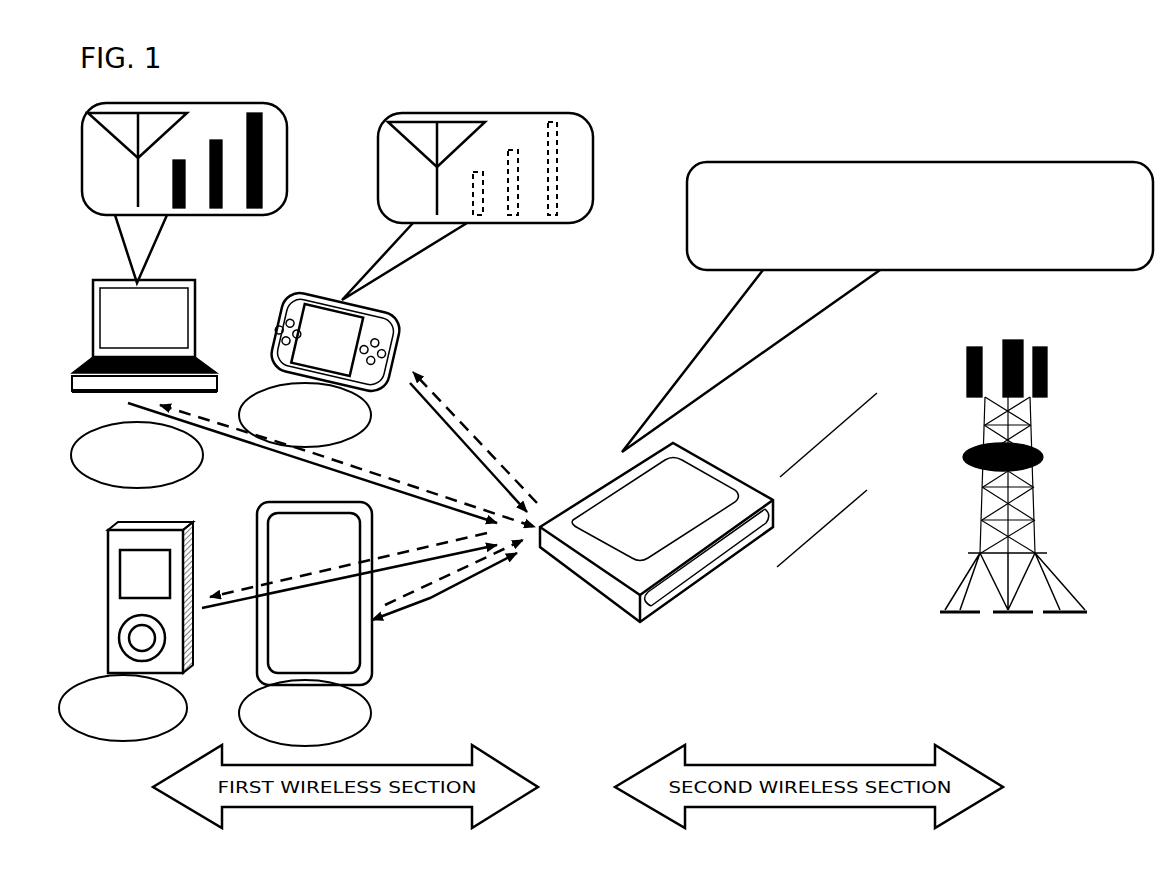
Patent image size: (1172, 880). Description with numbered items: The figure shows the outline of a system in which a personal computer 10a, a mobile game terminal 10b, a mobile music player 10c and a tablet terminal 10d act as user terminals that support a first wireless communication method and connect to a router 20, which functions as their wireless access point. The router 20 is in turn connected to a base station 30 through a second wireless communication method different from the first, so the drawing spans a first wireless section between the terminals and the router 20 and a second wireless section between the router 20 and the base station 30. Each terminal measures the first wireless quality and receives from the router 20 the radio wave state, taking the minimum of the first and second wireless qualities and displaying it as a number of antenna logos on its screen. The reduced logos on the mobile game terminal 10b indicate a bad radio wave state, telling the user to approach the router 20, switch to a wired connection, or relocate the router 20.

The personal computer 10a is at (195, 280).
The mobile game terminal 10b is at (388, 317).
The mobile music player 10c is at (167, 522).
The tablet terminal 10d is at (372, 665).
The router 20 is at (712, 460).
The base station 30 is at (1047, 343).